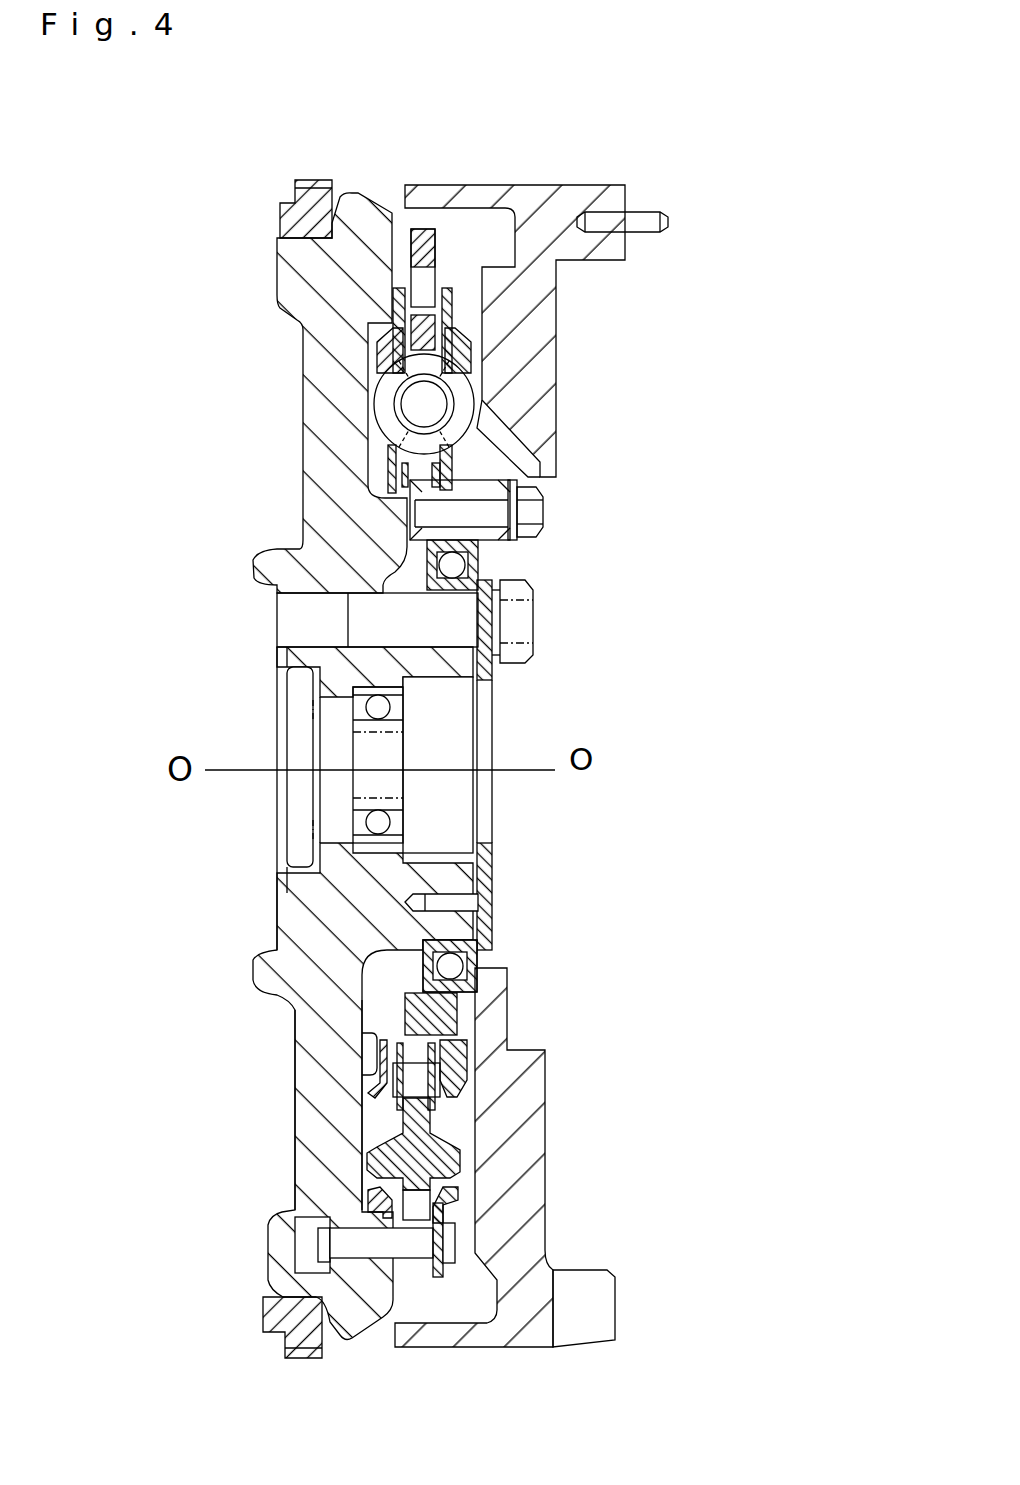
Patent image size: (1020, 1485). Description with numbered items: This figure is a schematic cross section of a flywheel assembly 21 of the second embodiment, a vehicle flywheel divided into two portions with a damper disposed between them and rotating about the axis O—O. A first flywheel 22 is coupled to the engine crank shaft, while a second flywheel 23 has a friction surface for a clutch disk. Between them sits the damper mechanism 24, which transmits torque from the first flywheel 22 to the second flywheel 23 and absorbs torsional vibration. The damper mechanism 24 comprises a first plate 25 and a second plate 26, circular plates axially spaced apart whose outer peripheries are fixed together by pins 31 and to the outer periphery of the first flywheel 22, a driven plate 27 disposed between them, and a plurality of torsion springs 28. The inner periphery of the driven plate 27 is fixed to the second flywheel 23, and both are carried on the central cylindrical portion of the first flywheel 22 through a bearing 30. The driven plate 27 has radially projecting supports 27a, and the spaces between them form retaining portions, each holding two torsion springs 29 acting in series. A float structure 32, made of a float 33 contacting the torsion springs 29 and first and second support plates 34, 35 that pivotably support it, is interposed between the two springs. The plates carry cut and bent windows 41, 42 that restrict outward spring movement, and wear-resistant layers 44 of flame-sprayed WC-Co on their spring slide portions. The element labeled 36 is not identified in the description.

The flywheel assembly 21 is at (695, 228).
The first flywheel 22 is at (323, 417).
The second flywheel 23 is at (543, 398).
The damper mechanism 24 is at (483, 420).
The first plate 25 is at (395, 302).
The second plate 26 is at (455, 295).
The driven plate 27 is at (430, 506).
The supports 27a is at (440, 303).
The torsion springs 28 is at (525, 513).
The torsion springs 29 is at (380, 432).
The bearing 30 is at (478, 930).
The pins 31 is at (423, 1243).
The float structure 32 is at (453, 1123).
The float 33 is at (450, 1157).
The first support plate 34 is at (400, 1104).
The second support plate 35 is at (440, 1060).
The slot plate 36 is at (431, 222).
The cut and bent window 41 is at (375, 363).
The cut and bent window 42 is at (465, 364).
The wear-resistant layer 44 is at (378, 358).